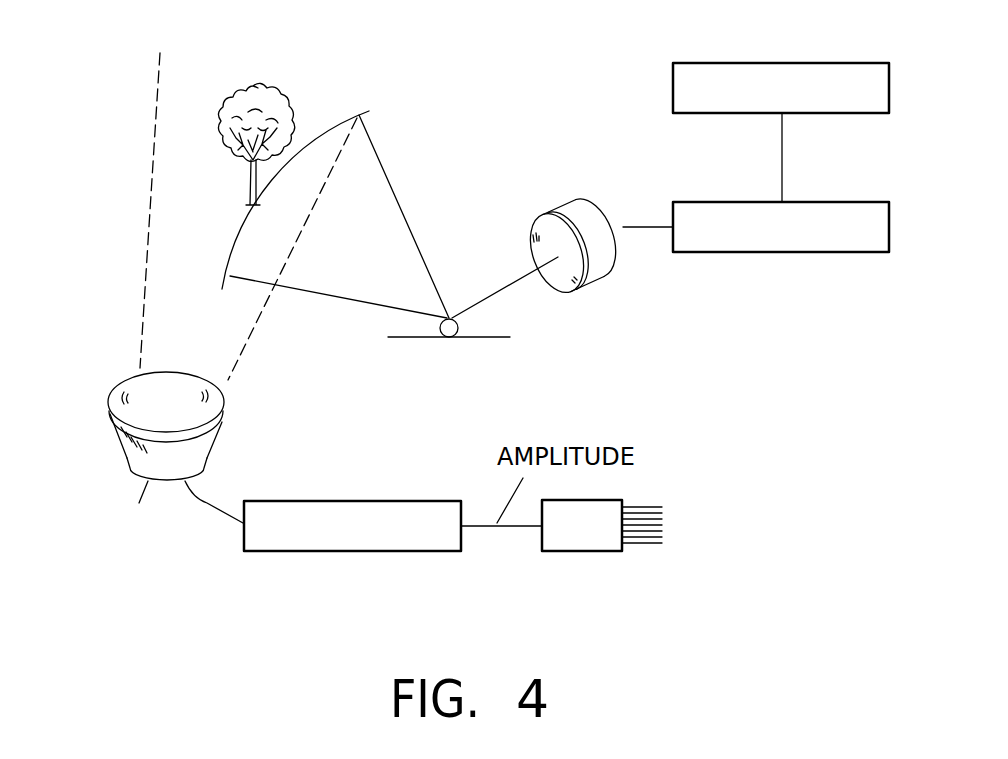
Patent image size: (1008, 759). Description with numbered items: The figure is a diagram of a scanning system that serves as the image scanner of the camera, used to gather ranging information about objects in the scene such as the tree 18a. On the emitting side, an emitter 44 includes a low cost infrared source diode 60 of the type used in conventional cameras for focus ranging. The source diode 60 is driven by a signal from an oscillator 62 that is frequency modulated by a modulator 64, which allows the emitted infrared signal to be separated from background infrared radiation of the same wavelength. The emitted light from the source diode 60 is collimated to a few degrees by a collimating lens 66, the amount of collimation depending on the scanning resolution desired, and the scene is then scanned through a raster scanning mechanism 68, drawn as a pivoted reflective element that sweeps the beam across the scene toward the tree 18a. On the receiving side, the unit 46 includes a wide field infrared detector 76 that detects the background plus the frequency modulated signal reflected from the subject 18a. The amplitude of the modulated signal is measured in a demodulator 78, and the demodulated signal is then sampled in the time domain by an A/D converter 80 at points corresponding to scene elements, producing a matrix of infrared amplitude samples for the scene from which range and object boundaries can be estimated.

The object 18a is at (250, 86).
The emitter 44 is at (524, 145).
The emitter 46 is at (157, 460).
The infrared source diode 60 is at (578, 204).
The oscillator 62 is at (817, 115).
The modulator 64 is at (817, 252).
The collimating lens 66 is at (528, 241).
The raster scanning mechanism 68 is at (418, 358).
The wide field IR detector 76 is at (217, 437).
The demodulator 78 is at (350, 552).
The A/D converter 80 is at (580, 551).